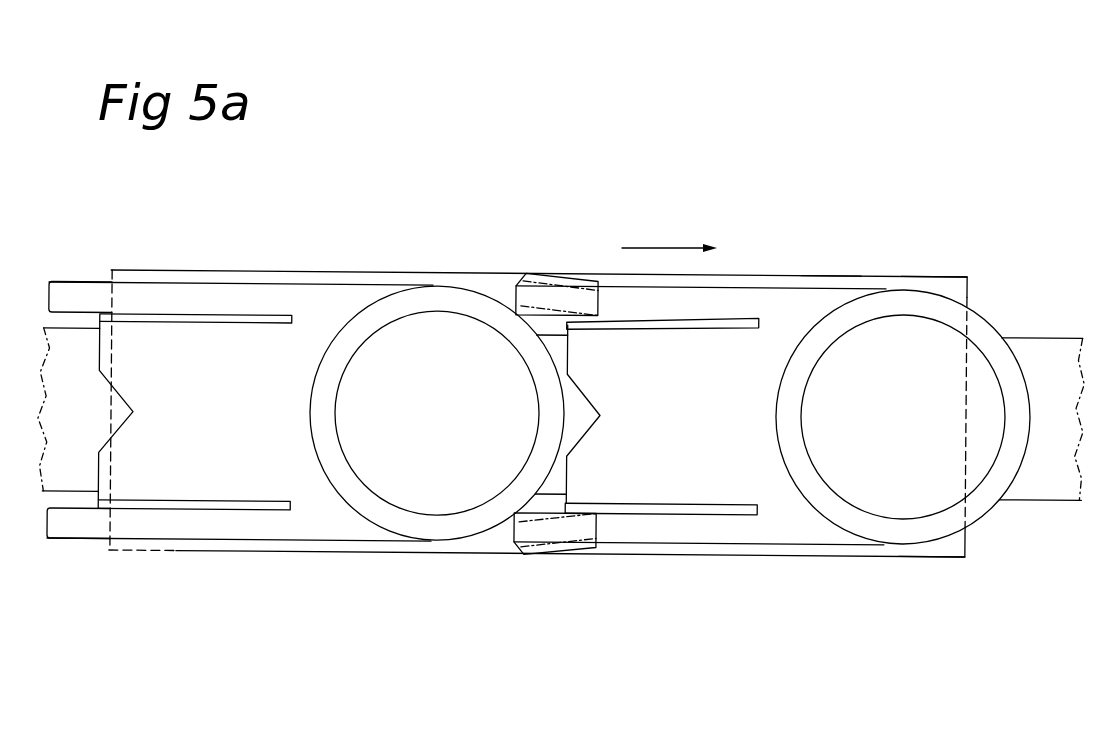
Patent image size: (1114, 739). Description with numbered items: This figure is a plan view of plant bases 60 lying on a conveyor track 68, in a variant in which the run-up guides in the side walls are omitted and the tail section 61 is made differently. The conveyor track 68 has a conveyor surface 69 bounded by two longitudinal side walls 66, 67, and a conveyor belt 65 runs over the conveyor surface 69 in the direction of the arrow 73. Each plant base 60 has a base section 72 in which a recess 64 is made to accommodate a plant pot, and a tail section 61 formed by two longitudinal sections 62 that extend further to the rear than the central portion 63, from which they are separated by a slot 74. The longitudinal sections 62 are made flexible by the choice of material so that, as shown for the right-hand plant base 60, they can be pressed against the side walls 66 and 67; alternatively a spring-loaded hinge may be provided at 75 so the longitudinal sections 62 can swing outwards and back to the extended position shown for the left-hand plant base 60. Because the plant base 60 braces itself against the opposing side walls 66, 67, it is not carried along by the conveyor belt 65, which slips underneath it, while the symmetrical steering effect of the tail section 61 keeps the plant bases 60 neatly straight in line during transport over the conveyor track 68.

The plant base 60 is at (320, 279).
The tail section 61 is at (80, 279).
The longitudinal sections 62 is at (198, 292).
The central portion 63 is at (158, 455).
The recess 64 is at (442, 333).
The conveyor belt 65 is at (1055, 355).
The side wall 66 is at (949, 277).
The side wall 67 is at (950, 557).
The conveyor track 68 is at (830, 267).
The conveyor surface 69 is at (958, 293).
The base section 72 is at (443, 527).
The arrow 73 is at (682, 248).
The slot 74 is at (597, 318).
The hinge location 75 is at (748, 528).